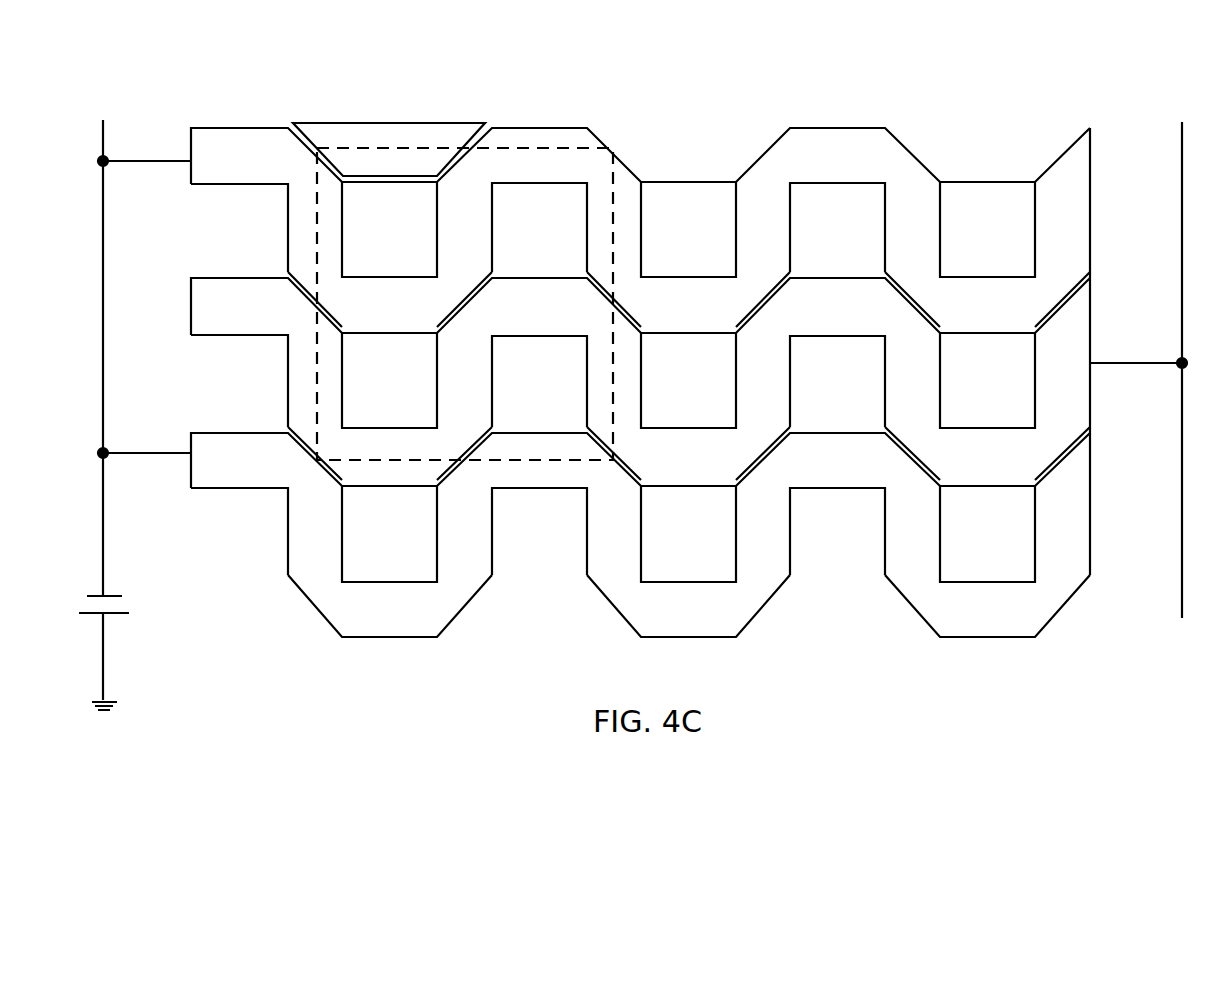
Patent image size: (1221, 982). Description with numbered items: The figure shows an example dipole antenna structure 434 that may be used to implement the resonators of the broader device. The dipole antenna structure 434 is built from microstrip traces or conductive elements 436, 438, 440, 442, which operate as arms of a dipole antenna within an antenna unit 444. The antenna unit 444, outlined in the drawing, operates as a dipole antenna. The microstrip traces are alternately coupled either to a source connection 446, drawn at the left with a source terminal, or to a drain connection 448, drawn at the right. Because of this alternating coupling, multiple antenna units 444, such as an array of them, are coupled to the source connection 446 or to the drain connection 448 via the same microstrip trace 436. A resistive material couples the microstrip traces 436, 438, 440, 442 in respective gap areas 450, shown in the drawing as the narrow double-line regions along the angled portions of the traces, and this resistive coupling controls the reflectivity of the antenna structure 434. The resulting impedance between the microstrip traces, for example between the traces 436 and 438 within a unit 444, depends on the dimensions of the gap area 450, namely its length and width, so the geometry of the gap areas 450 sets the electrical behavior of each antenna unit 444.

The dipole antenna structure 434 is at (146, 80).
The microstrip trace 436 is at (215, 128).
The microstrip trace 438 is at (215, 279).
The microstrip trace 440 is at (215, 433).
The microstrip trace 442 is at (453, 122).
The antenna unit 444 is at (315, 232).
The source connection 446 is at (106, 372).
The drain connection 448 is at (1182, 144).
The gap area 450 is at (426, 346).